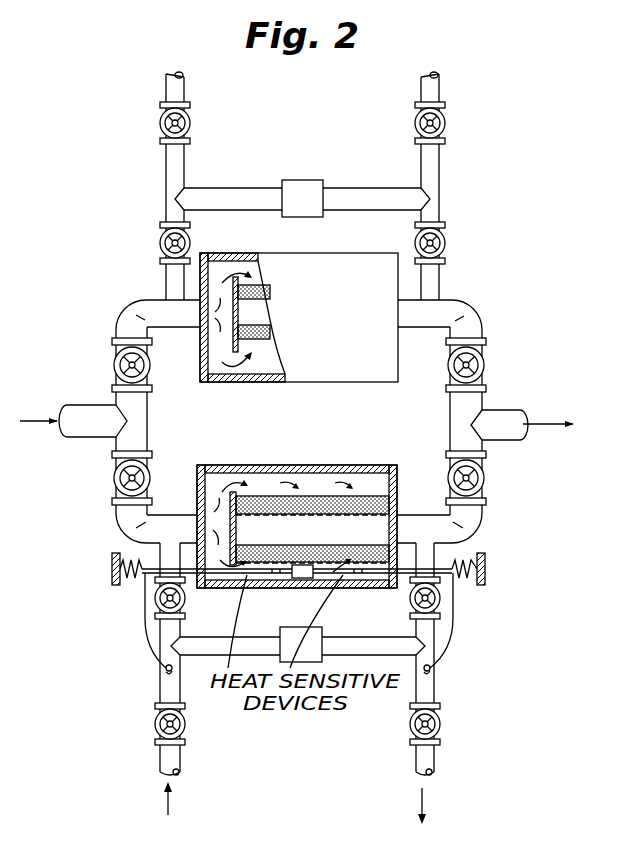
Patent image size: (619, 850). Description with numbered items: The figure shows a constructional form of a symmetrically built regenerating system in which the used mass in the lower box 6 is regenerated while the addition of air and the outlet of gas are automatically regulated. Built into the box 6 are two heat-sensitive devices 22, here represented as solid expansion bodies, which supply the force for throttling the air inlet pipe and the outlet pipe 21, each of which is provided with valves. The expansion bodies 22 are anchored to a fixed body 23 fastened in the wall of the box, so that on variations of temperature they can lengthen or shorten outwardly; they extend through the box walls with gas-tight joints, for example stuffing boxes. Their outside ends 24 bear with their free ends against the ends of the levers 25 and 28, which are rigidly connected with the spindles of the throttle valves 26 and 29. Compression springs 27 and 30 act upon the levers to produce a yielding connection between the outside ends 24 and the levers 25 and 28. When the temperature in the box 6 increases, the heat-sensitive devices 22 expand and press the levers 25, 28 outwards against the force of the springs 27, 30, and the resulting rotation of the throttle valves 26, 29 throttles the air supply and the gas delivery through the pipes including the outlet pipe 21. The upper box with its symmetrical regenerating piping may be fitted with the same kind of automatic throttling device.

The box 6 is at (297, 465).
The outlet pipe 21 is at (160, 762).
The heat-sensitive devices 22 is at (276, 574).
The fixed body 23 is at (306, 579).
The outside ends 24 is at (181, 600).
The lever 25 is at (145, 620).
The throttle valve 26 is at (165, 670).
The compression spring 27 is at (137, 562).
The lever 28 is at (455, 624).
The throttle valve 29 is at (431, 670).
The compression spring 30 is at (462, 563).